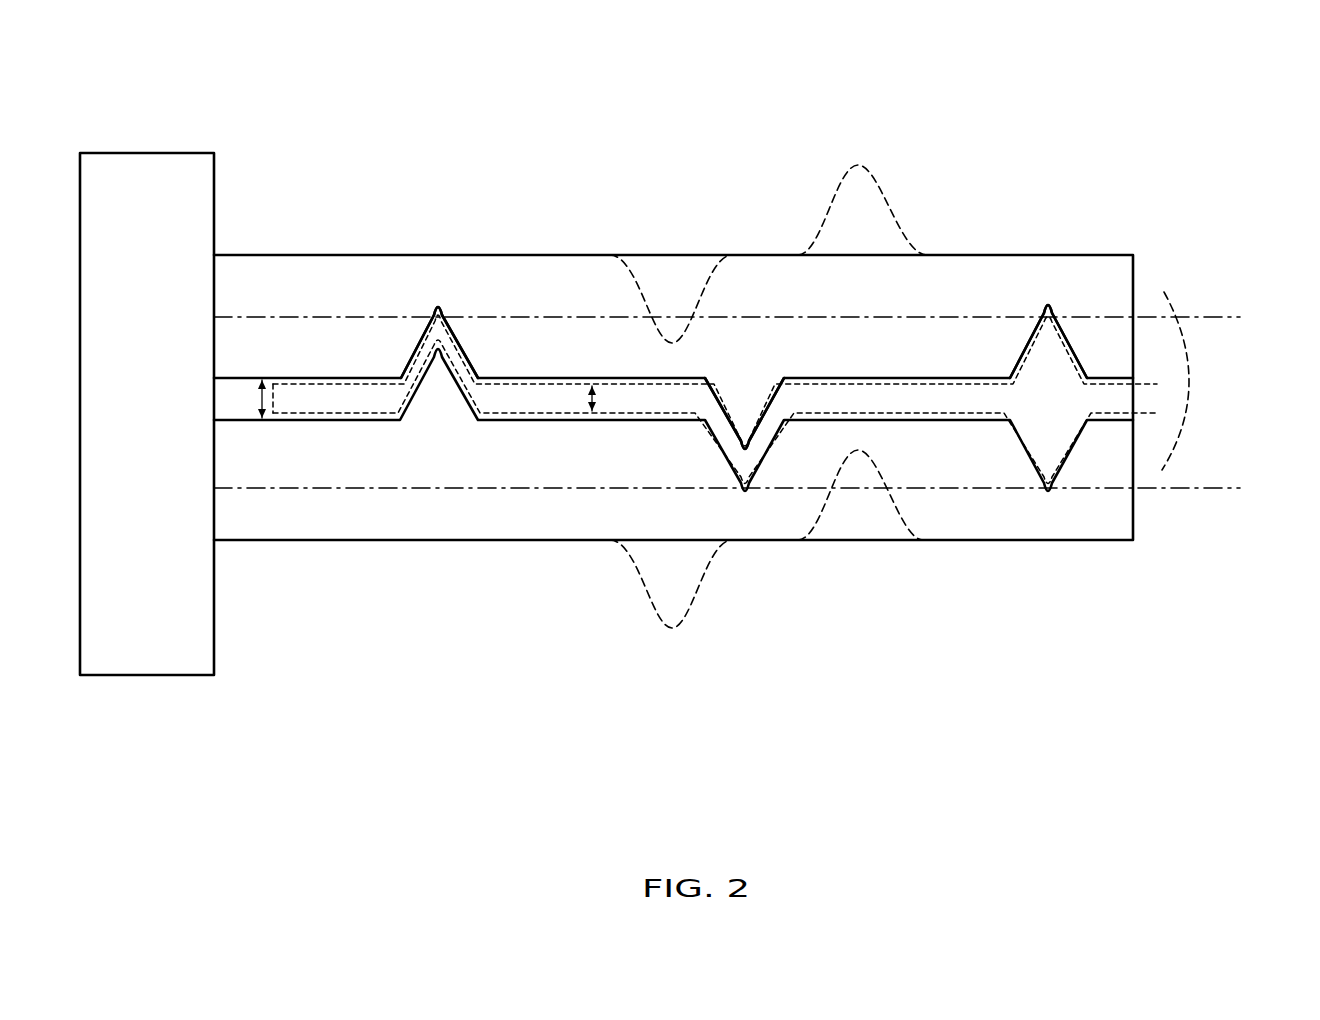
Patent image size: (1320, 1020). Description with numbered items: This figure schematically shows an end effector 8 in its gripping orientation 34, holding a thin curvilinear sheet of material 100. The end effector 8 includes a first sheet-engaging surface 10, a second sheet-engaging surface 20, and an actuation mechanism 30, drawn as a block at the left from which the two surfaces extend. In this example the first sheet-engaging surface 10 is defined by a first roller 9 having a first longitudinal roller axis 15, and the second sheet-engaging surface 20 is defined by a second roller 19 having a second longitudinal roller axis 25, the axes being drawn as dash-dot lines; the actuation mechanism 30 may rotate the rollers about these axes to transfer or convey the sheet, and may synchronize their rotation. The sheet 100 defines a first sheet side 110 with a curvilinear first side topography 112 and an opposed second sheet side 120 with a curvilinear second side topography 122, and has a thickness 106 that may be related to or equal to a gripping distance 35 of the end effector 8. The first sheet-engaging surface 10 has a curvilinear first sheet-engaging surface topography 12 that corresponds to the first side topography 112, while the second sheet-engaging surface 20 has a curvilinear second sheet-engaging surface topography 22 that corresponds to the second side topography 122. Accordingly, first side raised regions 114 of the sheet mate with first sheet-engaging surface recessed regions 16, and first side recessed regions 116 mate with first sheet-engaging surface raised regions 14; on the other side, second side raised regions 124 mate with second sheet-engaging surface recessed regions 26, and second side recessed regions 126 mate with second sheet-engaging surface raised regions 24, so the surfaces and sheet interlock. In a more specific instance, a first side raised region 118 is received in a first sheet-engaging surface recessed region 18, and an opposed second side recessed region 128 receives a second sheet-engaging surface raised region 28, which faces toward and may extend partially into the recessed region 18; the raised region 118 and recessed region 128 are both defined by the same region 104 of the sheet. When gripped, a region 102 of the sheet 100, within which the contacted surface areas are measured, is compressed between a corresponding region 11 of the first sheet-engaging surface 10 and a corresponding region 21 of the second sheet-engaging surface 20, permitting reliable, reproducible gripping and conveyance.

The end effector 8 is at (122, 62).
The actuation mechanism 30 is at (166, 145).
The gripping orientation 34 is at (1160, 215).
The first sheet-engaging surface 10 is at (233, 383).
The second sheet-engaging surface 20 is at (236, 413).
The gripping distance 35 is at (262, 394).
The first sheet side 110 is at (332, 380).
The second sheet side 120 is at (310, 420).
The thickness 106 is at (593, 405).
The first longitudinal roller axis 15 is at (577, 317).
The second longitudinal roller axis 25 is at (578, 488).
The region of curvilinear sheet of material 102 is at (875, 345).
The curvilinear sheet of material 100 is at (1160, 398).
The first sheet-engaging surface recessed region 18 is at (437, 306).
The first side raised regions 114 is at (430, 306).
The first side raised region 118 is at (465, 318).
The first sheet-engaging surface recessed regions 16 is at (473, 332).
The region of first sheet-engaging surface 11 is at (425, 332).
The region of curvilinear sheet of material 104 is at (470, 353).
The region of second sheet-engaging surface 21 is at (413, 398).
The second sheet-engaging surface raised regions 24 is at (441, 386).
The second side recessed region 128 is at (432, 352).
The second side recessed regions 126 is at (455, 390).
The second sheet-engaging surface raised region 28 is at (445, 352).
The first sheet-engaging surface raised regions 14 is at (742, 406).
The first side recessed regions 116 is at (757, 435).
The first roller 9 is at (1032, 245).
The curvilinear first side topography 112 is at (1070, 310).
The curvilinear first sheet-engaging surface topography 12 is at (1105, 355).
The second sheet-engaging surface recessed regions 26 is at (782, 462).
The curvilinear second sheet-engaging surface topography 22 is at (1115, 432).
The curvilinear second side topography 122 is at (1115, 445).
The second side raised regions 124 is at (1048, 492).
The second roller 19 is at (1030, 542).